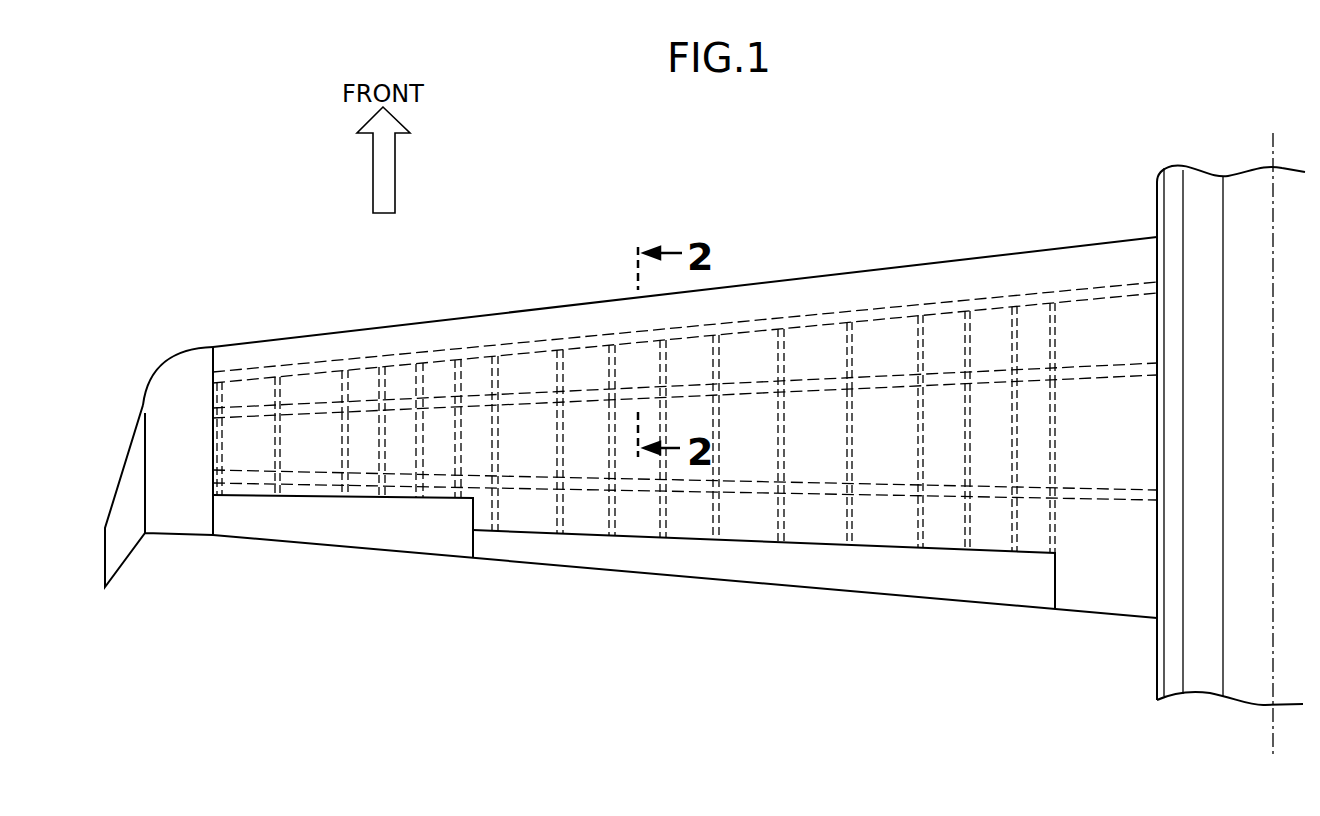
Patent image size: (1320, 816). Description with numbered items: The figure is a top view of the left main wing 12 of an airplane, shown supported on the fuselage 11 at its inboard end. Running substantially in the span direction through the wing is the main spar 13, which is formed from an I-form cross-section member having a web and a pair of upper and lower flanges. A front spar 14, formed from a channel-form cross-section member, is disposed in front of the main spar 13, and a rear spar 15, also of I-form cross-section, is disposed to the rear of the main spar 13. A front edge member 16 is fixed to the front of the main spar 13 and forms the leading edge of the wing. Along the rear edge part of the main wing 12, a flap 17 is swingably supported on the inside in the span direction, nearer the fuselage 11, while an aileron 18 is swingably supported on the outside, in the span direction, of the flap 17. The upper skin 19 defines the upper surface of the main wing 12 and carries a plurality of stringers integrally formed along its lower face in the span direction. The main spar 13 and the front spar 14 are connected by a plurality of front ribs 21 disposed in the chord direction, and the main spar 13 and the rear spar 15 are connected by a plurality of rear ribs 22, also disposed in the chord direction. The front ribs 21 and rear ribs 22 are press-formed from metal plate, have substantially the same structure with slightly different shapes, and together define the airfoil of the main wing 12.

The fuselage 11 is at (1146, 206).
The main wing 12 is at (908, 232).
The main spar 13 is at (943, 387).
The front spar 14 is at (945, 316).
The rear spar 15 is at (943, 485).
The front edge member 16 is at (753, 292).
The flap 17 is at (717, 570).
The aileron 18 is at (317, 535).
The upper skin 19 is at (736, 444).
The front rib 21 is at (348, 392).
The rear rib 22 is at (348, 450).